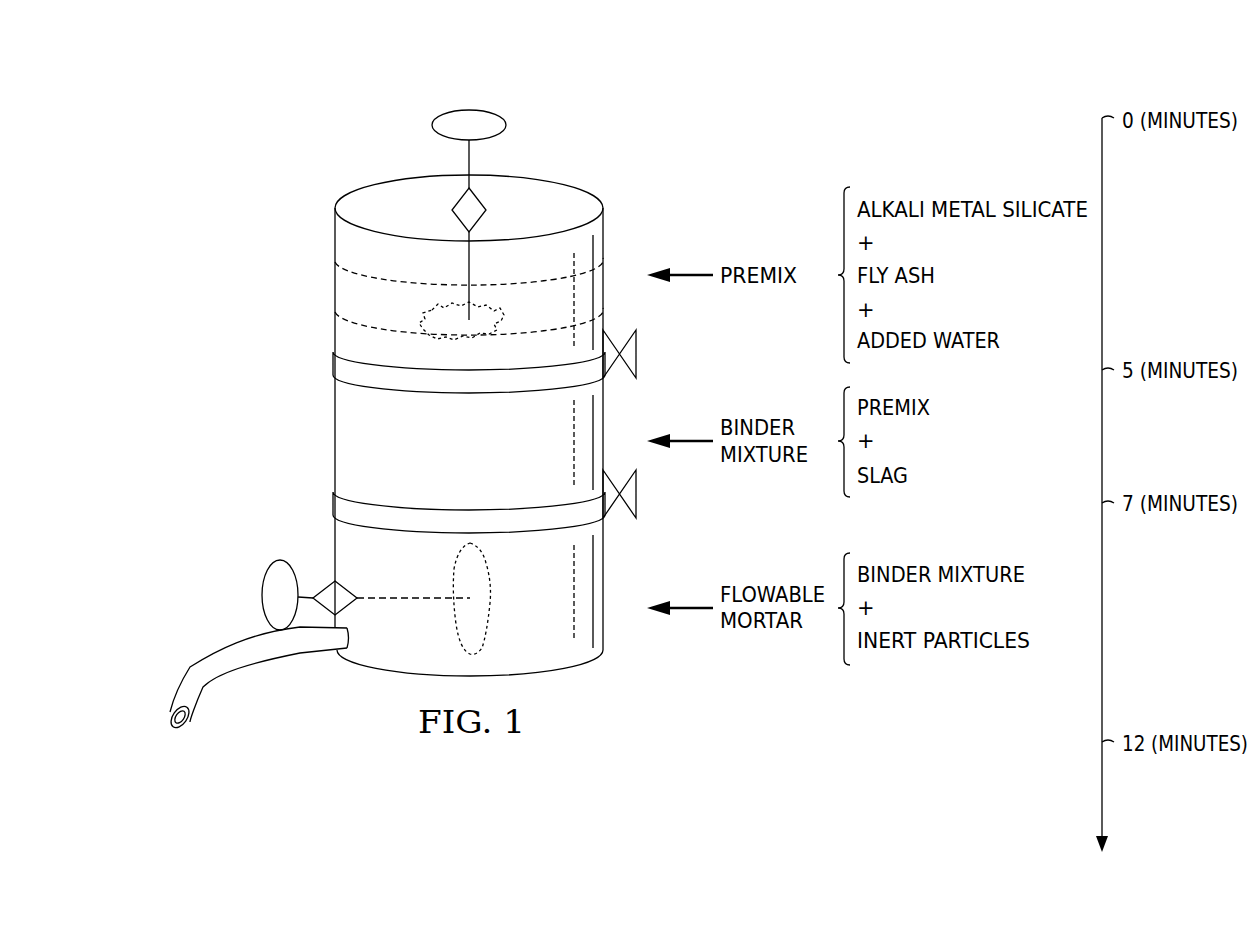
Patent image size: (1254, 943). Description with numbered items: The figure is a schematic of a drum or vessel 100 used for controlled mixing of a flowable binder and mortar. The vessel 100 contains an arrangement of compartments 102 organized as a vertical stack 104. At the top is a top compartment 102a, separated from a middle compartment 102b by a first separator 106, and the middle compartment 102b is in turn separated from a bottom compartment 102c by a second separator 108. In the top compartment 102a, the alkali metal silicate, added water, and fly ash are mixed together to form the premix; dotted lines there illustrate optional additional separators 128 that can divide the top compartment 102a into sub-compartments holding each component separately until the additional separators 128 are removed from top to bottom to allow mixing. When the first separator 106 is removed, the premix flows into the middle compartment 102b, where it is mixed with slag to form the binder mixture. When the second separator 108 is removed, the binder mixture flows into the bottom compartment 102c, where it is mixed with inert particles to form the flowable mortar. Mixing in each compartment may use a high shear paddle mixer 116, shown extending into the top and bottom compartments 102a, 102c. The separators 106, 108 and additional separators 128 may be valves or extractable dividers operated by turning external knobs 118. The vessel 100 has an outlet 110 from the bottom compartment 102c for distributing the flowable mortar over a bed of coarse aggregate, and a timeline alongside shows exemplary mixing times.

The drum or vessel 100 is at (444, 82).
The compartments 102 is at (250, 208).
The top compartment 102a is at (469, 395).
The middle compartment 102b is at (335, 418).
The bottom compartment 102c is at (340, 543).
The stack of compartments 104 is at (94, 173).
The first separator 106 is at (333, 353).
The second separator 108 is at (335, 497).
The outlet 110 is at (180, 667).
The high shear paddle mixer 116 is at (432, 125).
The external knobs 118 is at (640, 340).
The additional separators 128 is at (345, 254).